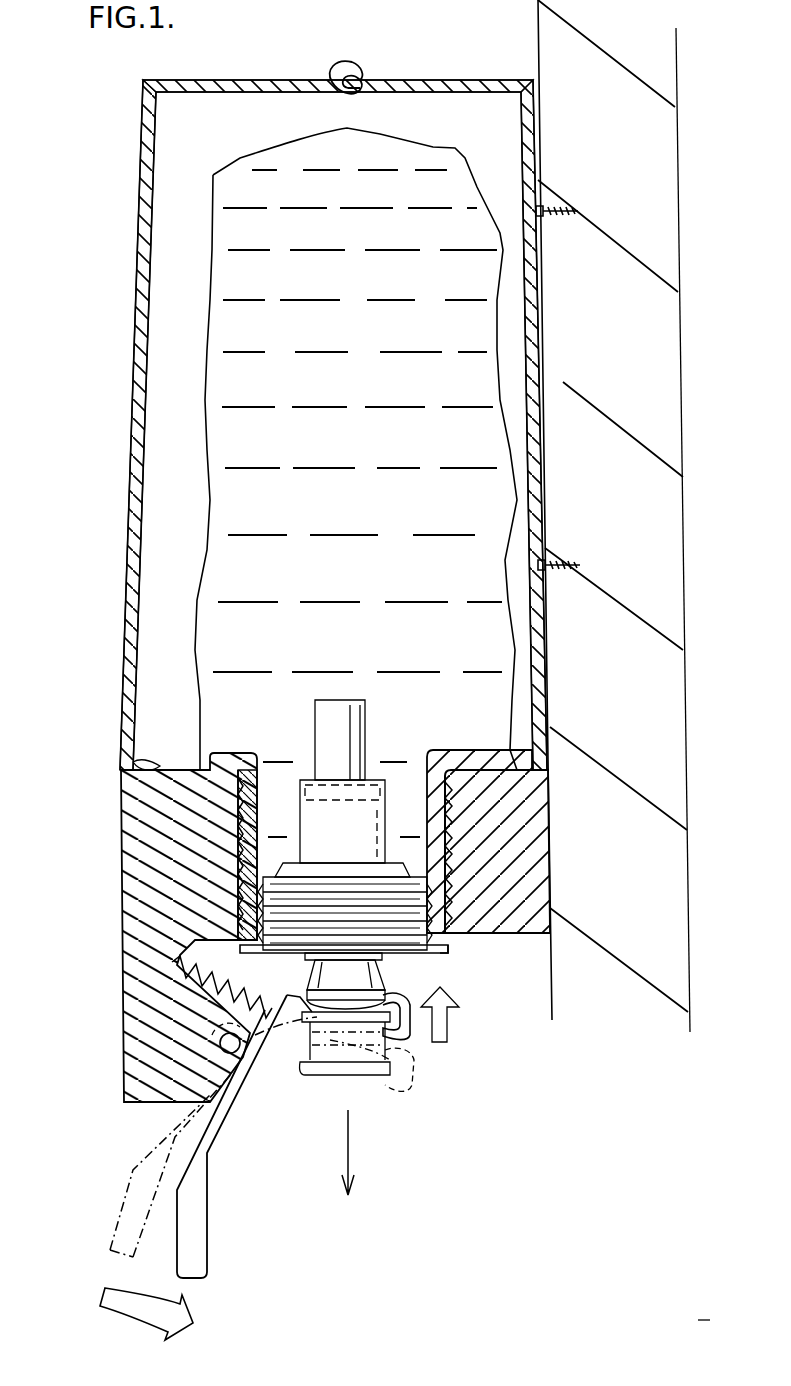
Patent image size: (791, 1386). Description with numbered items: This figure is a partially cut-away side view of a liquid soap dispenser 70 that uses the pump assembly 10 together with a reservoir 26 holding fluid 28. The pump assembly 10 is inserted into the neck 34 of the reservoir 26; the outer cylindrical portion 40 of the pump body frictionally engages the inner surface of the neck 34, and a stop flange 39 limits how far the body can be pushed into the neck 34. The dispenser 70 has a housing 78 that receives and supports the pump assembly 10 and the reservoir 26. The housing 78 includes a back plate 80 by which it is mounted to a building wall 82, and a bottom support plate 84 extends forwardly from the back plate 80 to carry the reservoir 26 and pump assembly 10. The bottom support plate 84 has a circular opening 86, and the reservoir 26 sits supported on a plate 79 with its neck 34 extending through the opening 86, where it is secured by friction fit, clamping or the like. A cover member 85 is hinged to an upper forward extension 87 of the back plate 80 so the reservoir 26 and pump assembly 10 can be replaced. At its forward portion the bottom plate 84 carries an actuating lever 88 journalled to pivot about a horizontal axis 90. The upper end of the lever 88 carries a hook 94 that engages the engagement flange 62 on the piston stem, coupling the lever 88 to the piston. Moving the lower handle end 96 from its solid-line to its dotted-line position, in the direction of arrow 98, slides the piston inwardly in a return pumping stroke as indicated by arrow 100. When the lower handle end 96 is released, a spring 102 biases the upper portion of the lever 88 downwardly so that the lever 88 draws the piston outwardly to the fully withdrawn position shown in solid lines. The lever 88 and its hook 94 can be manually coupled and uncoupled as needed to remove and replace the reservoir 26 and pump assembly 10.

The pump assembly 10 is at (366, 829).
The reservoir 26 is at (225, 447).
The fluid 28 is at (384, 384).
The reservoir neck 34 is at (445, 800).
The stop flange 39 is at (447, 955).
The outer cylindrical portion 40 is at (415, 956).
The engagement flange 62 is at (408, 1035).
The liquid soap dispenser 70 is at (314, 693).
The housing 78 is at (147, 894).
The plate 79 is at (155, 765).
The back plate 80 is at (535, 343).
The building wall 82 is at (601, 279).
The bottom support plate 84 is at (152, 808).
The cover member 85 is at (142, 318).
The circular opening 86 is at (450, 942).
The upper forward extension 87 is at (400, 80).
The actuating lever 88 is at (128, 1186).
The horizontal axis 90 is at (244, 1068).
The hook 94 is at (395, 1062).
The lower handle end 96 is at (115, 1232).
The arrow 98 is at (138, 1315).
The arrow 100 is at (447, 1038).
The spring 102 is at (210, 968).